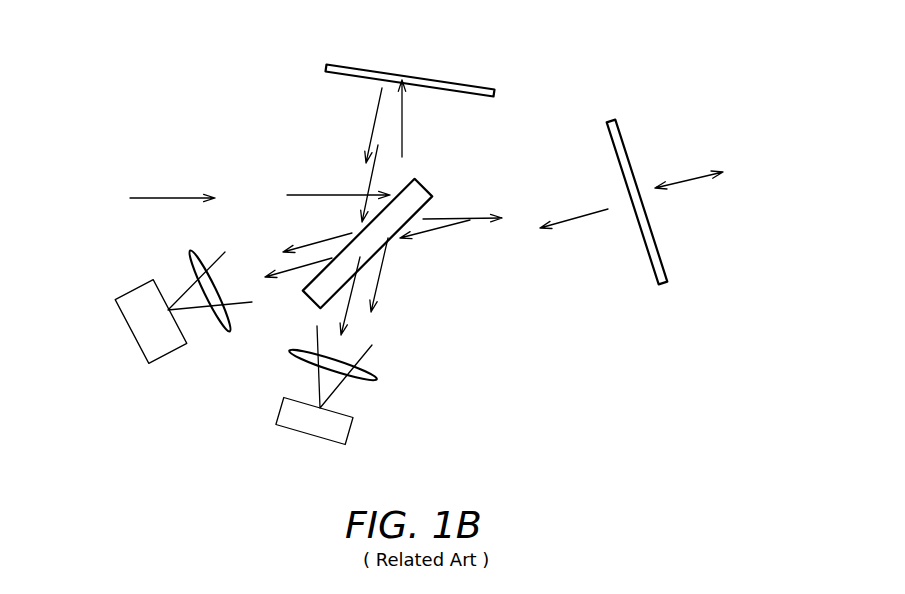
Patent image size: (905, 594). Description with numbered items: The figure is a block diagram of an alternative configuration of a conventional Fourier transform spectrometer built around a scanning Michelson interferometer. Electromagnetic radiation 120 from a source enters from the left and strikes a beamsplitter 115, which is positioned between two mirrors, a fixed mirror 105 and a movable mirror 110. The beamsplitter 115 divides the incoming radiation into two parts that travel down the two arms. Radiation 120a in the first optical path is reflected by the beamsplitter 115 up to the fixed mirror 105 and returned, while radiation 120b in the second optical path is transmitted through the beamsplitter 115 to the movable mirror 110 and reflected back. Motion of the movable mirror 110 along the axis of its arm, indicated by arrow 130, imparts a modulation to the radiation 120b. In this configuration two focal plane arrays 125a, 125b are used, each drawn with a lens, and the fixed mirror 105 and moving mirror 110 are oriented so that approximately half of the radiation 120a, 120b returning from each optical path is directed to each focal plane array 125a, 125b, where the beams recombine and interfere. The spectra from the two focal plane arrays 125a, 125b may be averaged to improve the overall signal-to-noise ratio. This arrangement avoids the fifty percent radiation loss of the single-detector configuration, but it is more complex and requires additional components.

The fixed mirror 105 is at (453, 82).
The movable mirror 110 is at (616, 122).
The beamsplitter 115 is at (424, 182).
The electromagnetic radiation 120 is at (148, 193).
The radiation in first optical path 120a is at (340, 120).
The radiation in second optical path 120b is at (482, 236).
The focal plane array 125a is at (130, 287).
The focal plane array 125b is at (352, 420).
The arrow indicating motion of movable mirror 130 is at (700, 178).